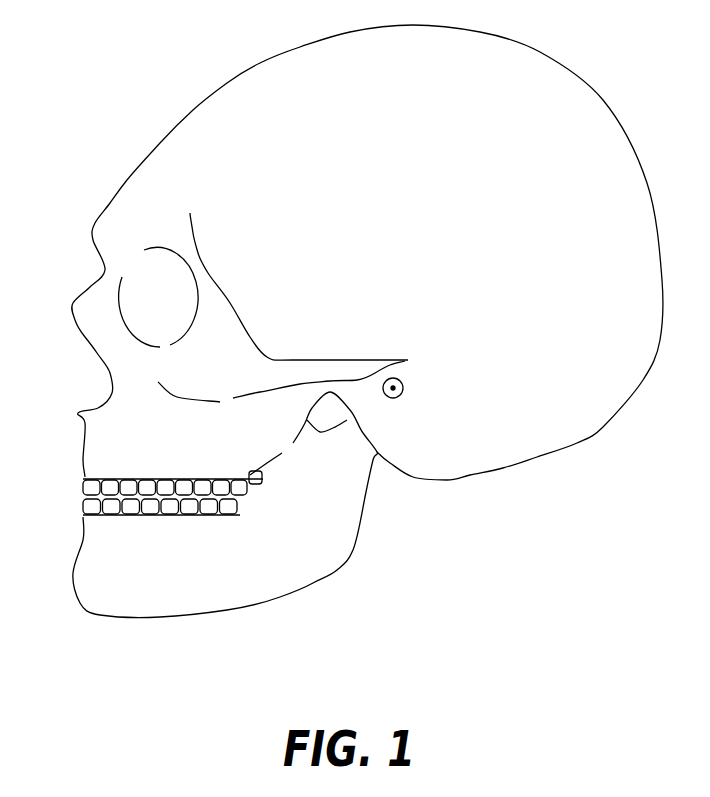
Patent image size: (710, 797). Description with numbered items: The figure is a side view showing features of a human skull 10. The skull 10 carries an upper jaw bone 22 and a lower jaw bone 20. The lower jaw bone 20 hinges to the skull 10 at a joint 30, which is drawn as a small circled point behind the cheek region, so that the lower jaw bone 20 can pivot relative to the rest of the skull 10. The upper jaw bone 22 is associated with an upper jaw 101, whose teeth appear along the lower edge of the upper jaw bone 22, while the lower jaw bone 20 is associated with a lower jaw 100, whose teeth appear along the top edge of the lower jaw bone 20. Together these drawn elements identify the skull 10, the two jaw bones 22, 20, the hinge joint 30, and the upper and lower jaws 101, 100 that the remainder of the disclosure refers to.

The human skull 10 is at (400, 214).
The upper jaw bone 22 is at (145, 449).
The lower jaw bone 20 is at (152, 563).
The joint 30 is at (403, 392).
The upper jaw 101 is at (262, 477).
The lower jaw 100 is at (238, 510).